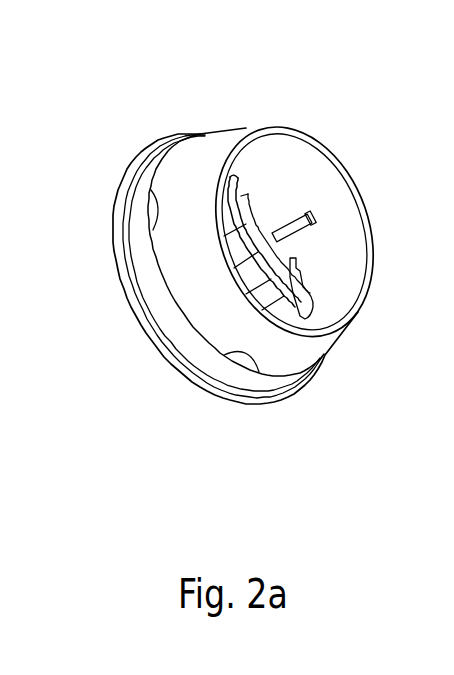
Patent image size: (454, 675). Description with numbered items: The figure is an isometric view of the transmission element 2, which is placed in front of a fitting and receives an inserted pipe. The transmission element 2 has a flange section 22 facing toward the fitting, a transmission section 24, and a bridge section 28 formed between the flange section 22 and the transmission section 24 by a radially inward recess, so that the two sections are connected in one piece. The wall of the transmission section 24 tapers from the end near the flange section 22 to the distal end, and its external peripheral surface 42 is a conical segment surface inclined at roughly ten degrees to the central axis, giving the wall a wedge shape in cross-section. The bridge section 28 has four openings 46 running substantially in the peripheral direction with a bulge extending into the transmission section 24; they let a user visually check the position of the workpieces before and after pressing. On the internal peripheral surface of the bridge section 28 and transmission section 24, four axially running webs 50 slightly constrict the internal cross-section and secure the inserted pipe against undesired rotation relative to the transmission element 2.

The transmission element 2 is at (244, 262).
The flange section 22 is at (246, 418).
The transmission section 24 is at (232, 120).
The bridge section 28 is at (281, 212).
The external peripheral surface 42 is at (307, 343).
The openings 46 is at (262, 192).
The webs 50 is at (313, 229).